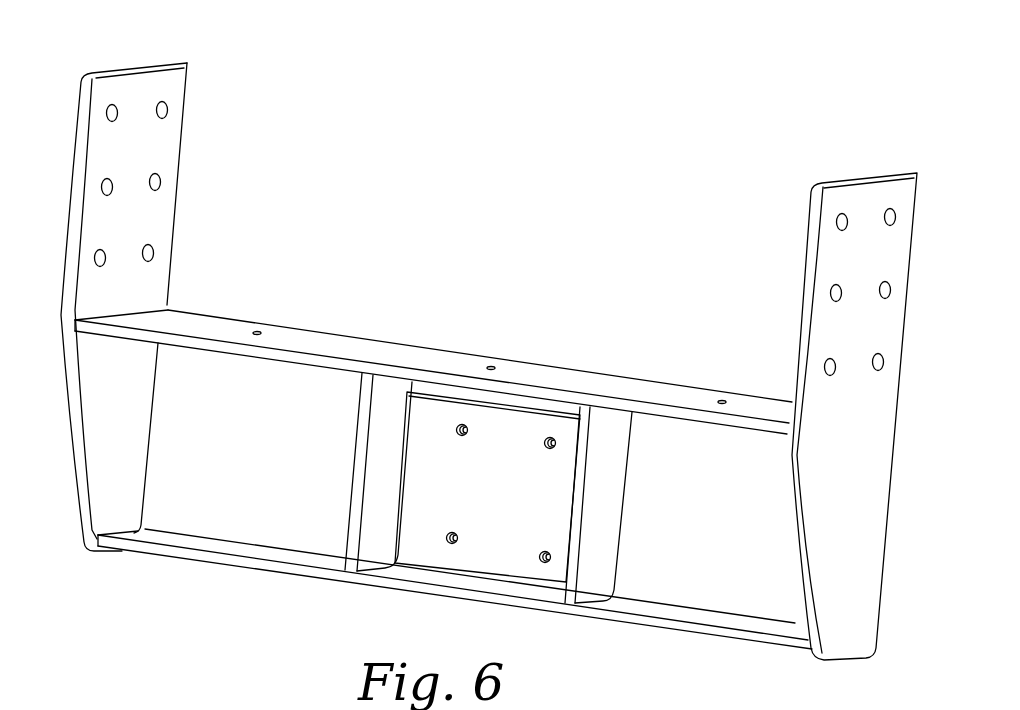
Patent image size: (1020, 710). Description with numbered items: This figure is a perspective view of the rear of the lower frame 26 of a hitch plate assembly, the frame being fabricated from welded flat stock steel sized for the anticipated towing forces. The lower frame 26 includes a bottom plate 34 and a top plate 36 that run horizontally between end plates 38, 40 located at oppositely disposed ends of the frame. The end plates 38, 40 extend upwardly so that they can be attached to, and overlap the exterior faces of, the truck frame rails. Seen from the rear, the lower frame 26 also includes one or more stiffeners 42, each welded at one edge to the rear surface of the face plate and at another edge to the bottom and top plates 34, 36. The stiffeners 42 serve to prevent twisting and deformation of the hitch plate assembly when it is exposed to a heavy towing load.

The lower frame 26 is at (590, 258).
The bottom plate 34 is at (176, 556).
The top plate 36 is at (392, 352).
The end plate 38 is at (883, 422).
The end plate 40 is at (72, 248).
The stiffener 42 is at (345, 527).